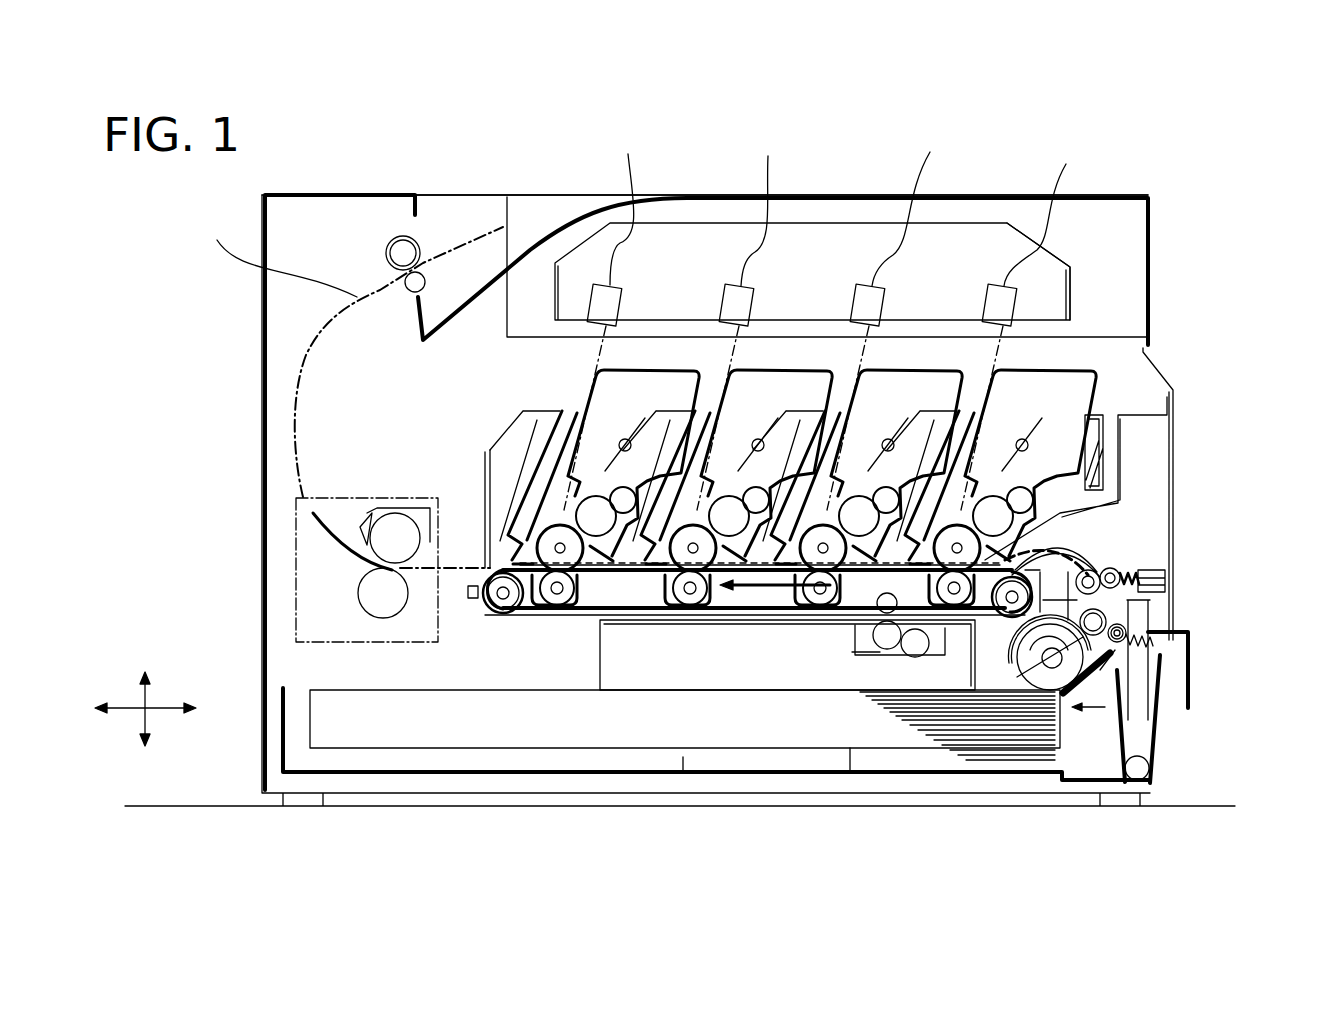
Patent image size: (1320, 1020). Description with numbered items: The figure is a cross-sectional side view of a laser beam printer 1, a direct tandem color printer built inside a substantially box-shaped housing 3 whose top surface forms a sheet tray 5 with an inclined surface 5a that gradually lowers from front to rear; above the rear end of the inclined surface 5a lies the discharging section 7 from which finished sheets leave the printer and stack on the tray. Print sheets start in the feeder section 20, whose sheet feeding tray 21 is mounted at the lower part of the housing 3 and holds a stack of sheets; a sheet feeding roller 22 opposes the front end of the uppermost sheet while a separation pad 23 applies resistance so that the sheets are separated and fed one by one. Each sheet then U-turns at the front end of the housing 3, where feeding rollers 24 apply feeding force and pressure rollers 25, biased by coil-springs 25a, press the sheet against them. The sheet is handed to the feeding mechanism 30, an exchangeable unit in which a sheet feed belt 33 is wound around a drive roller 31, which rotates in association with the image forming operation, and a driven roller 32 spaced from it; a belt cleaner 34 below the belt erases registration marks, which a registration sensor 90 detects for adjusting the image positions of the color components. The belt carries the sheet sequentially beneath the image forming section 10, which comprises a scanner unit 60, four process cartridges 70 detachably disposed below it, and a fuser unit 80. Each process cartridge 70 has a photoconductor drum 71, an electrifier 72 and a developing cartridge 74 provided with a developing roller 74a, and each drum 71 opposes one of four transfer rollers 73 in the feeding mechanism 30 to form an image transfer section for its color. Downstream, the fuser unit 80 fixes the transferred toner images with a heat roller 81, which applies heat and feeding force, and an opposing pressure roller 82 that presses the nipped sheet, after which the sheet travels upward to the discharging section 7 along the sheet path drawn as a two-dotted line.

The laser beam printer 1 is at (1176, 186).
The housing 3 is at (310, 195).
The sheet tray 5 is at (478, 210).
The inclined surface 5a is at (547, 237).
The discharging section 7 is at (437, 202).
The image forming section 10 is at (880, 218).
The feeder section 20 is at (1130, 690).
The sheet feeding tray 21 is at (660, 620).
The sheet feeding roller 22 is at (1165, 660).
The separation pad 23 is at (1150, 680).
The feeding rollers 24 is at (1090, 572).
The pressure rollers 25 is at (1115, 572).
The coil-springs 25a is at (1135, 578).
The feeding mechanism 30 is at (773, 607).
The drive roller 31 is at (505, 614).
The driven roller 32 is at (1005, 604).
The sheet feed belt 33 is at (827, 660).
The belt cleaner 34 is at (858, 637).
The scanner unit 60 is at (715, 218).
The process cartridges 70 is at (1067, 377).
The photoconductor drum 71 is at (575, 600).
The electrifier 72 is at (513, 560).
The transfer rollers 73 is at (560, 607).
The developing cartridge 74 is at (640, 580).
The developing roller 74a is at (615, 580).
The fuser unit 80 is at (393, 652).
The heat roller 81 is at (387, 527).
The pressure roller 82 is at (375, 588).
The registration sensor 90 is at (475, 600).